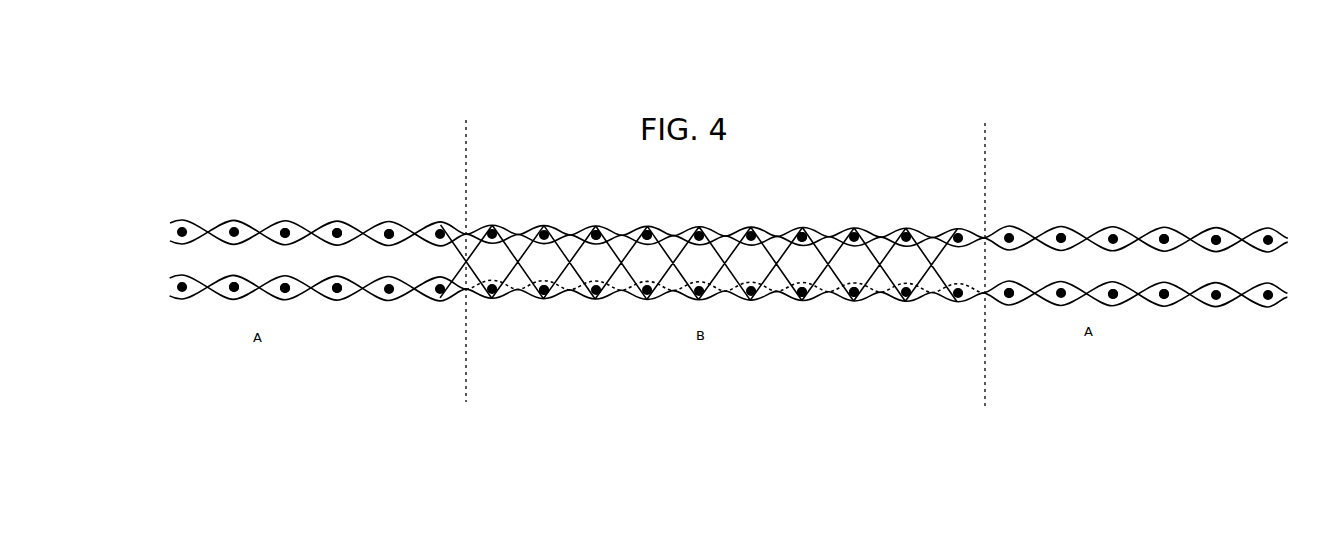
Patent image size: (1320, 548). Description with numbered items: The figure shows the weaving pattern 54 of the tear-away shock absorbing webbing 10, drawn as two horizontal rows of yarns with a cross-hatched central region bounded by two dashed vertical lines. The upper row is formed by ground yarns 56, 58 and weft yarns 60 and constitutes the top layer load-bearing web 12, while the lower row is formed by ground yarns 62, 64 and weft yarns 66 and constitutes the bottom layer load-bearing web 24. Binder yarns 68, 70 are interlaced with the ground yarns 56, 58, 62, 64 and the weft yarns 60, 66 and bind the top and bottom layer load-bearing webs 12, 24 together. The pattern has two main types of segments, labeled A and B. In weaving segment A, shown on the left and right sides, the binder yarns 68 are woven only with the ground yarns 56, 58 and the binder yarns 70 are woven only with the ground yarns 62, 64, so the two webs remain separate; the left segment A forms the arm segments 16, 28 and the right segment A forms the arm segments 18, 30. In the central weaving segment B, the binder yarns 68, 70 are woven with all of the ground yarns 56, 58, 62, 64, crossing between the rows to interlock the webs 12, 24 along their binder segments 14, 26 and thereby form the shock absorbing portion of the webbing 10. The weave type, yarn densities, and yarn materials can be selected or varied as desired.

The tear-away shock absorbing webbing 10 is at (396, 115).
The top layer load-bearing web 12 is at (1088, 126).
The binder segment 14 is at (767, 179).
The arm segment 16 is at (279, 175).
The arm segment 18 is at (1196, 152).
The bottom layer load-bearing web 24 is at (248, 394).
The binder segment 26 is at (673, 357).
The arm segment 28 is at (243, 327).
The arm segment 30 is at (1110, 374).
The weaving pattern 54 is at (909, 80).
The ground yarn 56 is at (298, 225).
The ground yarn 58 is at (298, 245).
The weft yarn 60 is at (392, 222).
The ground yarn 62 is at (287, 300).
The ground yarn 64 is at (340, 300).
The weft yarn 66 is at (232, 288).
The binder yarn 68 is at (213, 228).
The binder yarn 70 is at (355, 300).